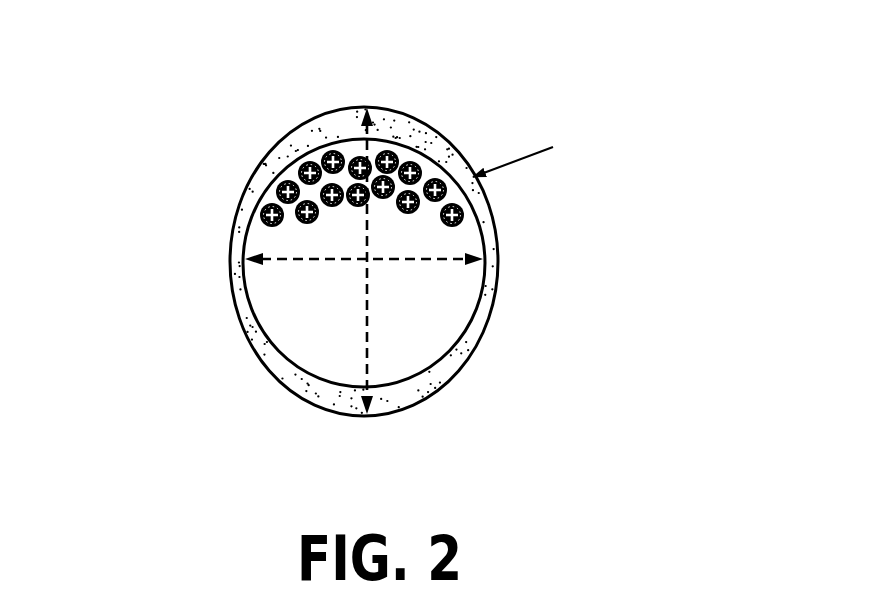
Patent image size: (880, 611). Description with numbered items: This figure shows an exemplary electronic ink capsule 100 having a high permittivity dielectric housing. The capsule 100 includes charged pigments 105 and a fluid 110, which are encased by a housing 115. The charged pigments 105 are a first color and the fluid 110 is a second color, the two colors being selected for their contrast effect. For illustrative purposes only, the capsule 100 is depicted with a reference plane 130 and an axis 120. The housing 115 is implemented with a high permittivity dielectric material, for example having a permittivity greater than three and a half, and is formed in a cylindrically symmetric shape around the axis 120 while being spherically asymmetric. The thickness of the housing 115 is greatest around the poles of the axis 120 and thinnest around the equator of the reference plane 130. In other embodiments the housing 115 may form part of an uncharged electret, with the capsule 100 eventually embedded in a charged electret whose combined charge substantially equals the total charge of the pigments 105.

The electronic ink capsule 100 is at (233, 200).
The charged pigments 105 is at (400, 146).
The fluid 110 is at (290, 300).
The housing 115 is at (460, 348).
The axis 120 is at (385, 412).
The reference plane 130 is at (466, 264).